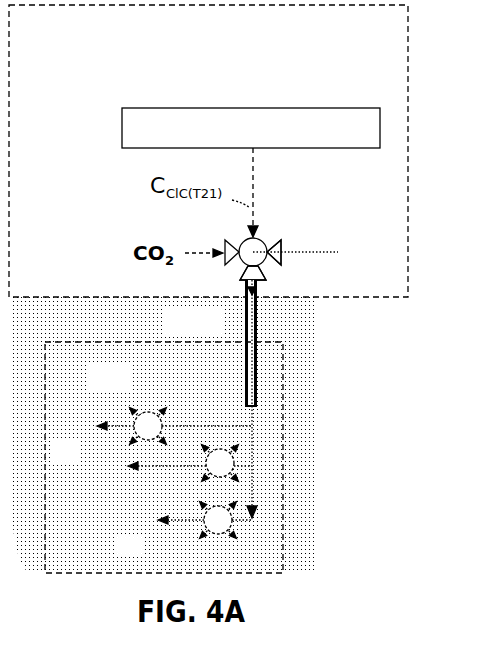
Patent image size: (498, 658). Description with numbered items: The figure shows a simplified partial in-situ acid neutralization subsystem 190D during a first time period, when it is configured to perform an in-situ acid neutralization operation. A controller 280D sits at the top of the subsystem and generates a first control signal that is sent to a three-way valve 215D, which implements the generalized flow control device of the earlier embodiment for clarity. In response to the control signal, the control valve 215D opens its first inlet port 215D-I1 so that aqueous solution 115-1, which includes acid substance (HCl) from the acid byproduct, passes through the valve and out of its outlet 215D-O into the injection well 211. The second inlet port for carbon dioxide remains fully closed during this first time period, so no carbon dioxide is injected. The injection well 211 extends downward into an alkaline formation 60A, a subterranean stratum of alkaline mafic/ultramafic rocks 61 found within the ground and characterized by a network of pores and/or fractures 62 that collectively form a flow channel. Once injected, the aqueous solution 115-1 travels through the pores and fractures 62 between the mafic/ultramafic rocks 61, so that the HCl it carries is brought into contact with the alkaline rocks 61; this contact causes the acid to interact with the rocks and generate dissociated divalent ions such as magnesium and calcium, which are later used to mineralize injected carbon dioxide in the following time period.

The in-situ acid neutralization system 190D is at (167, 78).
The controller 280D is at (368, 138).
The three-way valve 215D is at (257, 240).
The valve outlet 215D-O is at (238, 273).
The first inlet port 215D-I1 is at (272, 260).
The aqueous solution 115-1 is at (283, 431).
The injection well 211 is at (245, 332).
The alkaline formation 60A is at (127, 387).
The alkaline rocks 61 is at (207, 450).
The pores and/or fractures 62 is at (187, 428).